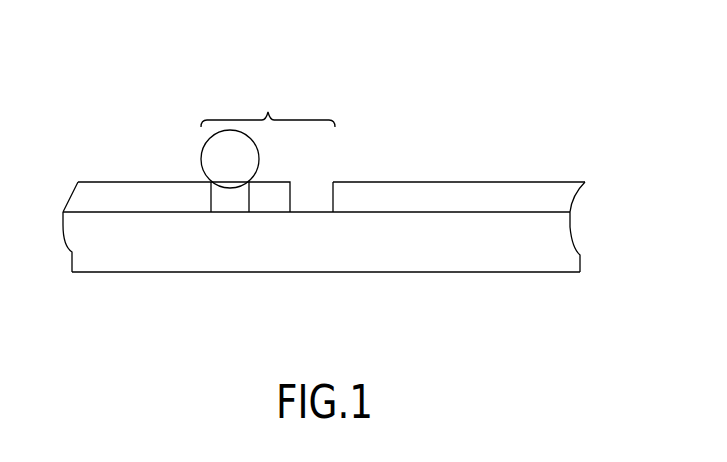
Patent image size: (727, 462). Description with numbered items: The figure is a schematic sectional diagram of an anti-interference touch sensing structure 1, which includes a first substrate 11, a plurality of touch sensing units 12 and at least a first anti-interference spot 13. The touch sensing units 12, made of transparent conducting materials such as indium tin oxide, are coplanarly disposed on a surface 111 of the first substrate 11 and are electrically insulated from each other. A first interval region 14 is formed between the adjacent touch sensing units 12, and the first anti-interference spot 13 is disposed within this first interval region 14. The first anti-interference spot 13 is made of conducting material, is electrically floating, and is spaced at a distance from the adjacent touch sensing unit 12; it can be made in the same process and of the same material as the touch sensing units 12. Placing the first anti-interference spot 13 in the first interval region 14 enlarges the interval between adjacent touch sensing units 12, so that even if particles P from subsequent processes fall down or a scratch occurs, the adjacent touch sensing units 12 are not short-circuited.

The anti-interference touch sensing structure 1 is at (104, 43).
The first substrate 11 is at (558, 247).
The touch sensing units 12 is at (125, 181).
The first anti-interference spot 13 is at (273, 200).
The first interval region 14 is at (247, 148).
The surface 111 is at (308, 212).
The particles P is at (230, 159).